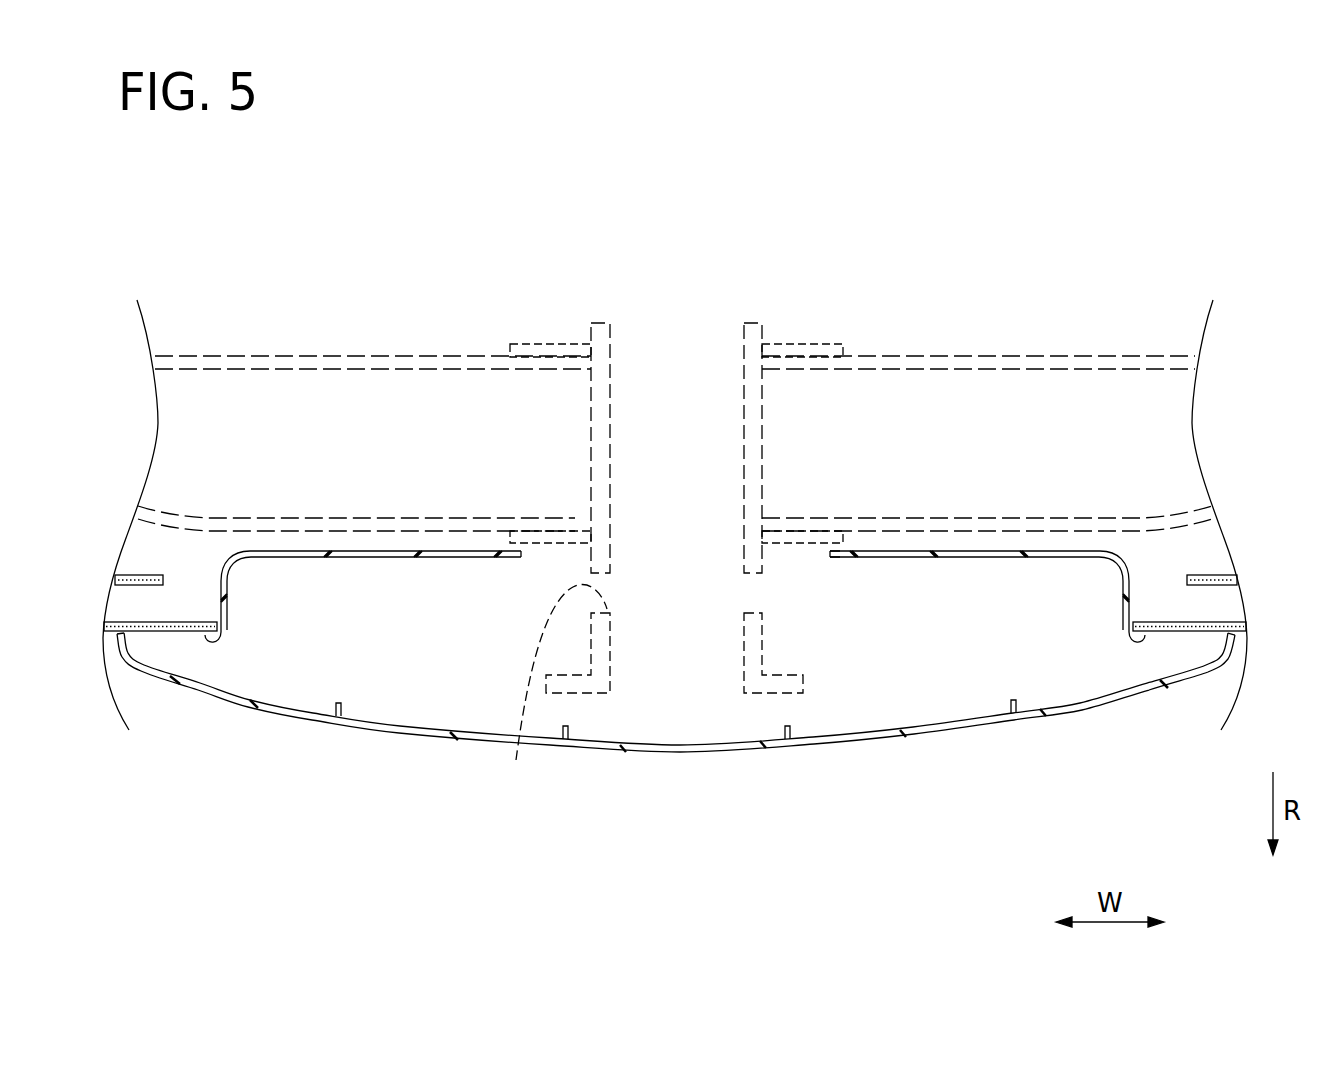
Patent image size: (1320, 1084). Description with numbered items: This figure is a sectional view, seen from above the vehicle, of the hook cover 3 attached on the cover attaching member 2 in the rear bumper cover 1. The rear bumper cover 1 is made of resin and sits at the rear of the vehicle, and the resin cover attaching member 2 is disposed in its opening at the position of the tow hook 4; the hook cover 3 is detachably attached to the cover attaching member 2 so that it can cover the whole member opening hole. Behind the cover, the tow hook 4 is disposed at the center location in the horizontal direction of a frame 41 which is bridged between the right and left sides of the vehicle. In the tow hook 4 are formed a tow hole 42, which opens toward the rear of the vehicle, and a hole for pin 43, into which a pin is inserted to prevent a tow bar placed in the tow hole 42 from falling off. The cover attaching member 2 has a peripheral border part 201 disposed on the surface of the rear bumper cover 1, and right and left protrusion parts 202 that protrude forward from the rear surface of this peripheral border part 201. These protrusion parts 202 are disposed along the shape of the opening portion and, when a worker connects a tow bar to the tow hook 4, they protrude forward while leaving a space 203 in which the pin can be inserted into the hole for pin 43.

The rear bumper cover 1 is at (172, 632).
The cover attaching member 2 is at (402, 572).
The hook cover 3 is at (942, 738).
The tow hook 4 is at (648, 679).
The frame 41 is at (372, 363).
The tow hole 42 is at (741, 691).
The hole for pin 43 is at (516, 760).
The peripheral border part 201 is at (1137, 640).
The protrusion parts 202 is at (963, 555).
The space 203 is at (823, 593).